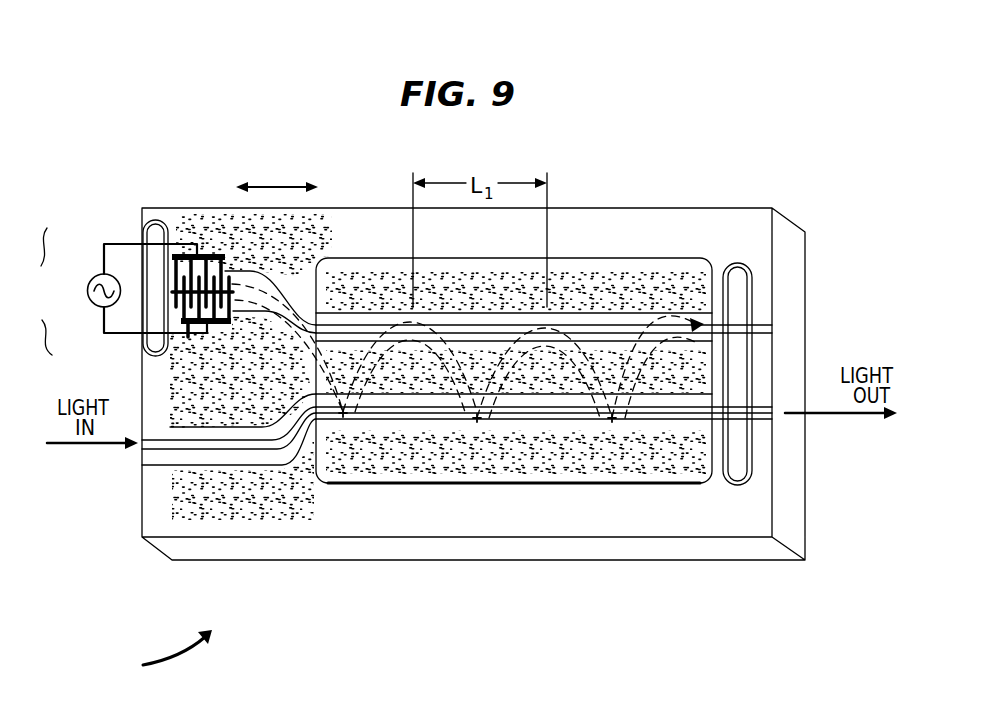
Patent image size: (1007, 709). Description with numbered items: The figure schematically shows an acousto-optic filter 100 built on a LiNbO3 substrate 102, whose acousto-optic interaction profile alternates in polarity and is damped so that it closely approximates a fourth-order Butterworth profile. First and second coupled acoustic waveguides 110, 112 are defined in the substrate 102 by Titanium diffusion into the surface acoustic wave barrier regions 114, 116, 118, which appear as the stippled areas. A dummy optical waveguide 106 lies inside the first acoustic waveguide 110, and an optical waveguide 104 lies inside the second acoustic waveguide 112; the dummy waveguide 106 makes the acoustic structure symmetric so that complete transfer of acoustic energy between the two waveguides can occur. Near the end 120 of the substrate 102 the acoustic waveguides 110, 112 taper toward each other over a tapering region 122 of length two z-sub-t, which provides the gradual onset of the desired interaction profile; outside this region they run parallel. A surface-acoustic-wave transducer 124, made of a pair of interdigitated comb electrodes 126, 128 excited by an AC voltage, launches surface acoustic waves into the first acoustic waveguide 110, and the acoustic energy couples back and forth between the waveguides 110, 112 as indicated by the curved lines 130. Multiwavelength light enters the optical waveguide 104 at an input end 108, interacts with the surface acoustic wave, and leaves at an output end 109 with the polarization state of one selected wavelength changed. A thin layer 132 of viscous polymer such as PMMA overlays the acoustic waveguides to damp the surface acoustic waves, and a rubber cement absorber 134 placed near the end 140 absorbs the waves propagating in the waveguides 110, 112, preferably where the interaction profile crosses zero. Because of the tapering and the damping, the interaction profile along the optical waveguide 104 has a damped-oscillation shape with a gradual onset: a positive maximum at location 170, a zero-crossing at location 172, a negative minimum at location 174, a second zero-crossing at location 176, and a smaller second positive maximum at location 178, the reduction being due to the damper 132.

The acousto-optic filter 100 is at (156, 654).
The substrate 102 is at (750, 212).
The optical waveguide 104 is at (672, 420).
The dummy optical waveguide 106 is at (368, 325).
The input end 108 is at (138, 450).
The output end 109 is at (780, 418).
The first acoustic waveguide 110 is at (603, 322).
The second acoustic waveguide 112 is at (257, 457).
The surface acoustic wave barrier region 114 is at (193, 405).
The surface acoustic wave barrier region 116 is at (215, 240).
The surface acoustic wave barrier region 118 is at (186, 478).
The end of the substrate 120 is at (142, 222).
The tapering region 122 is at (275, 153).
The transducer 124 is at (112, 291).
The interdigitated comb electrode 126 is at (183, 257).
The interdigitated comb electrode 128 is at (185, 353).
The curved lines 130 is at (713, 370).
The thin layer of viscous polymer material 132 is at (652, 262).
The absorber 134 is at (158, 220).
The end of the substrate 140 is at (697, 327).
The location of positive maximum 170 is at (343, 418).
The location of zero-crossing 172 is at (418, 415).
The location of negative minimum 174 is at (477, 420).
The location of zero-crossing 176 is at (542, 415).
The location of second positive maximum 178 is at (612, 420).